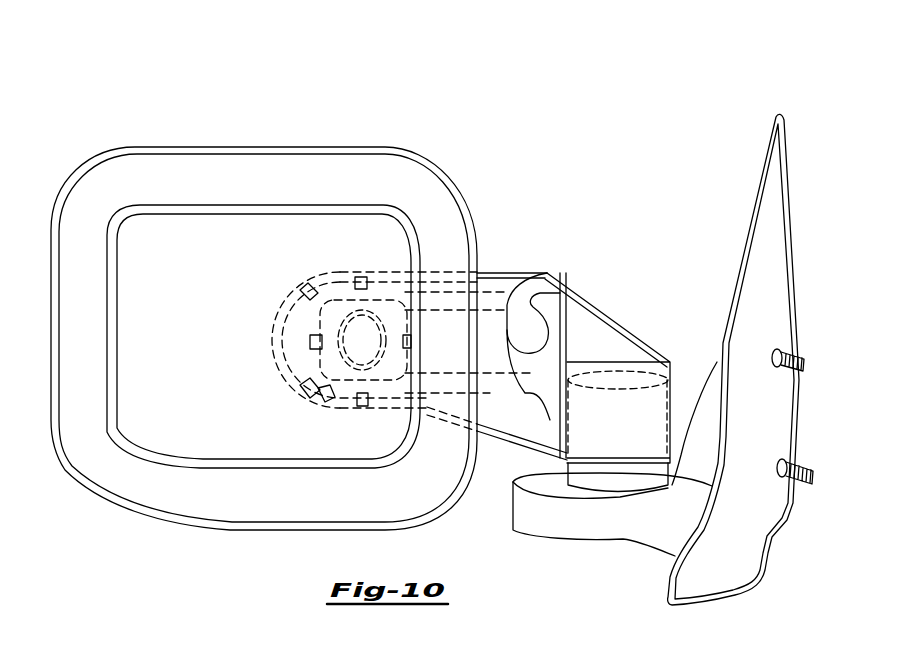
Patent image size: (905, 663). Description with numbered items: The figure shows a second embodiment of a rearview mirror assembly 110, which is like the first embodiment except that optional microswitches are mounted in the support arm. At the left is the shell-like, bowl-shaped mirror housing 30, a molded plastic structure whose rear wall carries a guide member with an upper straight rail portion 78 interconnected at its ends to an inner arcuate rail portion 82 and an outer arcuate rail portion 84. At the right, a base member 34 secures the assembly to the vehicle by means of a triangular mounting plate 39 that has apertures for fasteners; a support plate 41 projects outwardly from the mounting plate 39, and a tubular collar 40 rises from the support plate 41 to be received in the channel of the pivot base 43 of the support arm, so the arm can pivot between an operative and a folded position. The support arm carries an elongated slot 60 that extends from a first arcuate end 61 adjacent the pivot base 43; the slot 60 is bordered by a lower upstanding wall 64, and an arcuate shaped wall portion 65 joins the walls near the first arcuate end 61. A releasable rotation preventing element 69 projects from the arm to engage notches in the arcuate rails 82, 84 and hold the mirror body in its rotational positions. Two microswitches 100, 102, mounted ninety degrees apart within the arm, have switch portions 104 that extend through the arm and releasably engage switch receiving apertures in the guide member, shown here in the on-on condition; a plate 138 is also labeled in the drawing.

The mirror housing 30 is at (95, 165).
The base member 34 is at (792, 172).
The mounting plate 39 is at (787, 330).
The tubular collar 40 is at (660, 410).
The support plate 41 is at (623, 540).
The pivot base 43 is at (620, 323).
The elongated slot 60 is at (452, 313).
The first arcuate end 61 is at (543, 273).
The lower upstanding wall 64 is at (502, 430).
The arcuate shaped wall portion 65 is at (543, 328).
The releasable rotation preventing element 69 is at (310, 342).
The upper straight rail portion 78 is at (338, 277).
The inner arcuate rail portion 82 is at (400, 277).
The outer arcuate rail portion 84 is at (300, 378).
The microswitch 100 is at (300, 284).
The microswitch 102 is at (305, 392).
The switch portion 104 is at (300, 297).
The rearview mirror assembly 110 is at (733, 68).
The support plate 138 is at (522, 273).